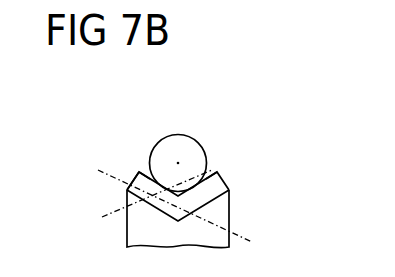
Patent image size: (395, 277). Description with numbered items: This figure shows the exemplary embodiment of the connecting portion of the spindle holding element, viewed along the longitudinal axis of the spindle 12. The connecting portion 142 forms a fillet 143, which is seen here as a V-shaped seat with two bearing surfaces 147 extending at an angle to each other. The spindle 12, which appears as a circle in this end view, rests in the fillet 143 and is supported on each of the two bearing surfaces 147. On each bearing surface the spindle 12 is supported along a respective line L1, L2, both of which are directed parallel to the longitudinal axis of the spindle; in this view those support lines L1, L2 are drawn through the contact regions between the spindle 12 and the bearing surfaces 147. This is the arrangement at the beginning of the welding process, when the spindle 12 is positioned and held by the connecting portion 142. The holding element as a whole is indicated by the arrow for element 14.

The spindle 12 is at (163, 137).
The V-block support 14 is at (238, 178).
The connecting portion 142 is at (130, 182).
The fillet 143 is at (178, 196).
The bearing surfaces 147 is at (146, 172).
The line L1 is at (142, 204).
The line L2 is at (191, 219).